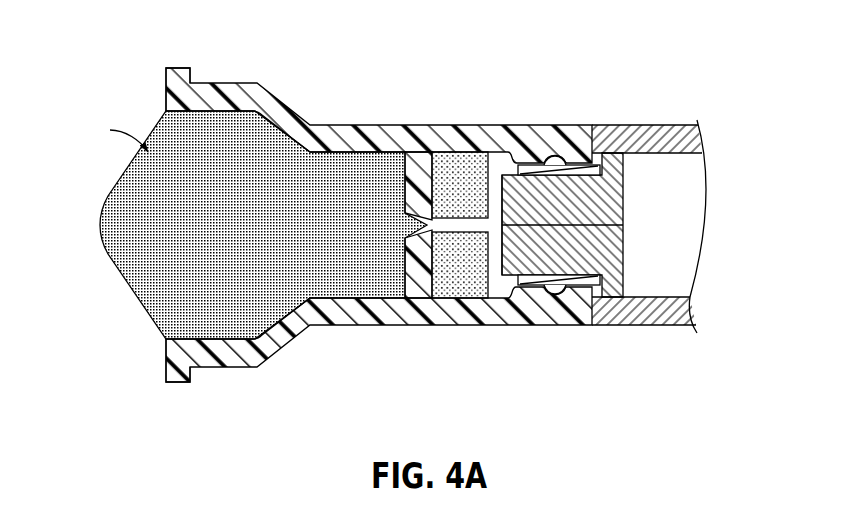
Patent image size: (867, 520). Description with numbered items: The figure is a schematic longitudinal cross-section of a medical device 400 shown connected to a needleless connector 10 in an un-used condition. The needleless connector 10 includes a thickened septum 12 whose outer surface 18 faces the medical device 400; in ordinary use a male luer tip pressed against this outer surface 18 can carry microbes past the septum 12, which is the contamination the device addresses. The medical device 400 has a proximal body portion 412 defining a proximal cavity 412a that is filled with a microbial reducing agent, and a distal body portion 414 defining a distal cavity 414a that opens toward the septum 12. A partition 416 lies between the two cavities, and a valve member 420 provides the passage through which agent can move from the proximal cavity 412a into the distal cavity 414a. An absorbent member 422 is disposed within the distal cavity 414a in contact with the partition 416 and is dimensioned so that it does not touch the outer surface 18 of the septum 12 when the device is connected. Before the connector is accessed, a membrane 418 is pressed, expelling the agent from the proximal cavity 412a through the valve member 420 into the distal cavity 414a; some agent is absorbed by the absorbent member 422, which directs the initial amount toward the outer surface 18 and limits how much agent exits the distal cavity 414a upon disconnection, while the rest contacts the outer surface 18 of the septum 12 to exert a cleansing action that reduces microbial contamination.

The medical device 400 is at (398, 207).
The needleless connector 10 is at (667, 112).
The septum 12 is at (628, 200).
The outer surface 18 is at (499, 262).
The proximal body portion 412 is at (285, 210).
The proximal cavity 412a is at (192, 108).
The distal body portion 414 is at (525, 195).
The distal cavity 414a is at (493, 150).
The partition 416 is at (419, 169).
The membrane 418 is at (128, 298).
The valve member 420 is at (412, 260).
The absorbent member 422 is at (456, 291).